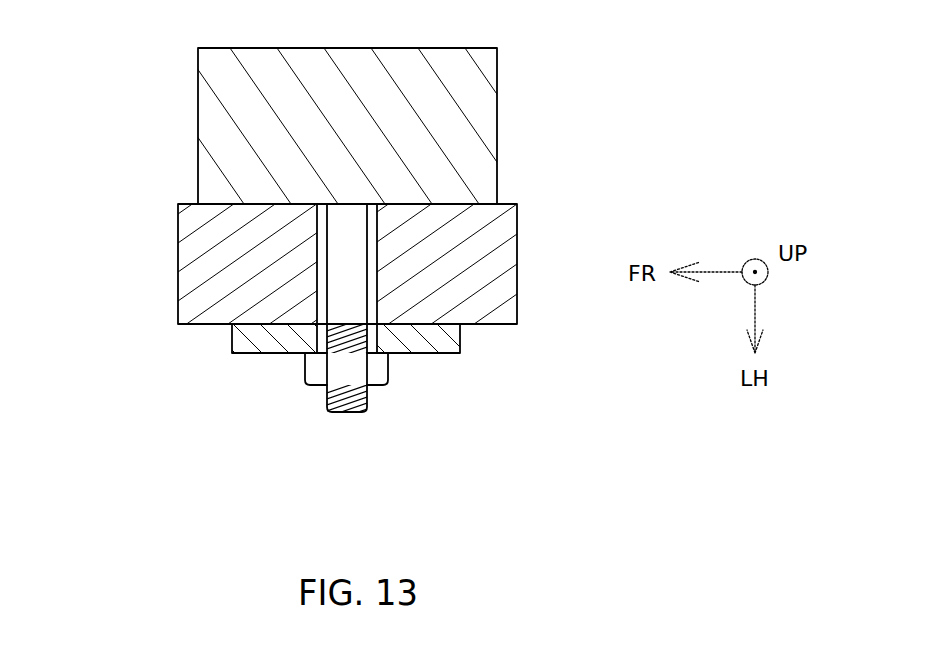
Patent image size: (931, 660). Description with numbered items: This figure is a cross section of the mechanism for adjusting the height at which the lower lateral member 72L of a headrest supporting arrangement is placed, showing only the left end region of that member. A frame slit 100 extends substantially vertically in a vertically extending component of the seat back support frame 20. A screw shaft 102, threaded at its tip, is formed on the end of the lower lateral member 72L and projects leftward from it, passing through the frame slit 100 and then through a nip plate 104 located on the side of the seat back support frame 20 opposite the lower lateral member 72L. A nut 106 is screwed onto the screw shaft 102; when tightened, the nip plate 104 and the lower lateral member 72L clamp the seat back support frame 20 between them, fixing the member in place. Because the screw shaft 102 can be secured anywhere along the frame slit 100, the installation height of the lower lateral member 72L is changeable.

The lower lateral member 72L is at (213, 128).
The seat back support frame 20 is at (197, 245).
The frame slit 100 is at (372, 257).
The screw shaft 102 is at (352, 273).
The nip plate 104 is at (265, 348).
The nut 106 is at (377, 370).